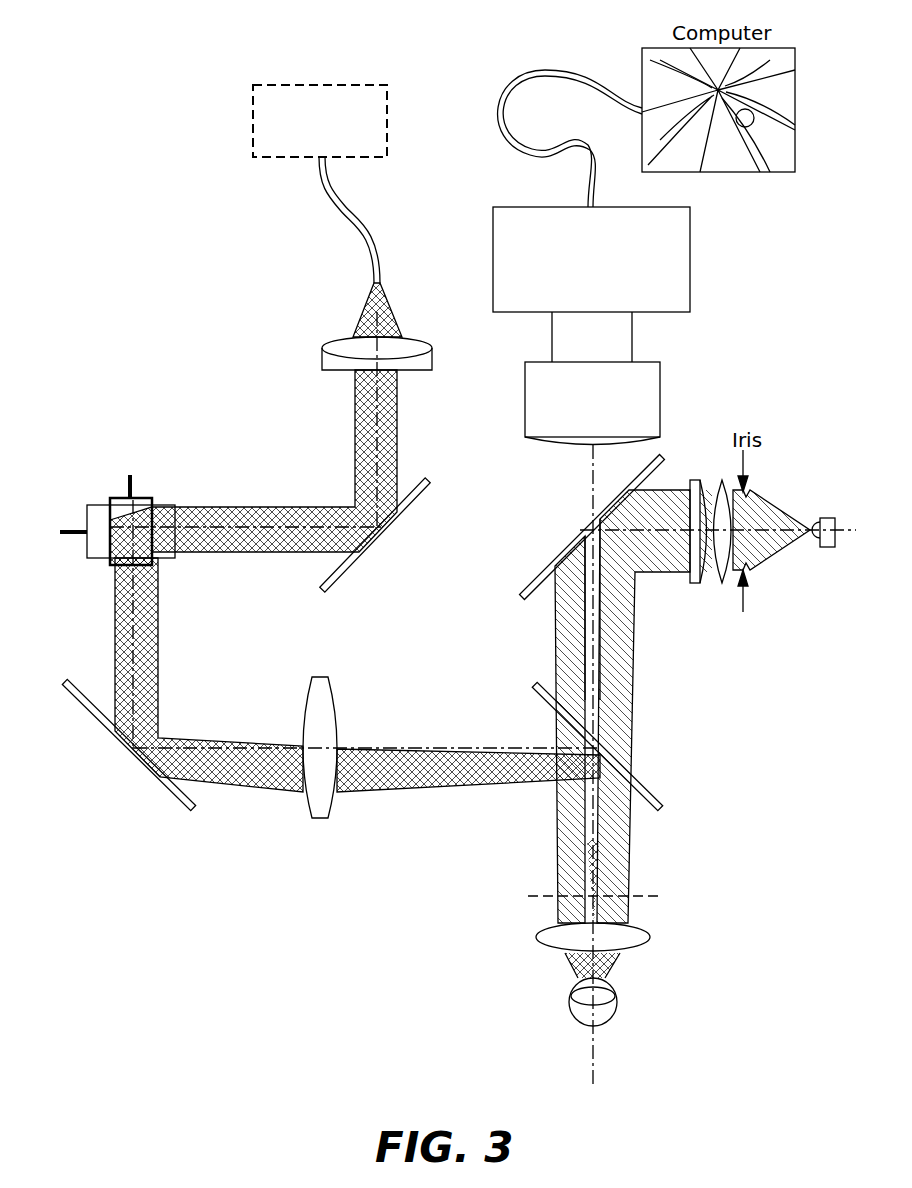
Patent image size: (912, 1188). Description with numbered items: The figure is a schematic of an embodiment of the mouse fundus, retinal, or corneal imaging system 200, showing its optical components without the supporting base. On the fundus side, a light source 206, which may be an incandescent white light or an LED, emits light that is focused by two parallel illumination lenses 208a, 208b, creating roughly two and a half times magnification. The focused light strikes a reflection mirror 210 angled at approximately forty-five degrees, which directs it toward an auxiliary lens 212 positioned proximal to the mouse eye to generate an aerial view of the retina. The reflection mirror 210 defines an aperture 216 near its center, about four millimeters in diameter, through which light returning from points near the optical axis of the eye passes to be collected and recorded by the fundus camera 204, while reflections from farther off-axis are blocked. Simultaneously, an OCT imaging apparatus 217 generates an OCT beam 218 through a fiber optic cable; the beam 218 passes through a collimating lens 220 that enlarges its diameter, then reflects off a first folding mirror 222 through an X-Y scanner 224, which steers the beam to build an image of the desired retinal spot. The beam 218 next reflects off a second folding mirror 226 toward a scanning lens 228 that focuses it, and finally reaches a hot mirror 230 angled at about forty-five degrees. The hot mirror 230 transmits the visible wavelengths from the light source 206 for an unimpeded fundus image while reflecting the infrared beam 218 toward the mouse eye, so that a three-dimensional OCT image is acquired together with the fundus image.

The imaging system 200 is at (212, 103).
The fundus camera 204 is at (612, 275).
The light source 206 is at (826, 518).
The illumination lens 208a is at (700, 583).
The illumination lens 208b is at (724, 583).
The reflection mirror 210 is at (522, 594).
The auxiliary lens 212 is at (538, 944).
The aperture 216 is at (588, 522).
The OCT imaging apparatus 217 is at (345, 135).
The OCT beam 218 is at (386, 292).
The collimating lens 220 is at (326, 346).
The first folding mirror 222 is at (340, 580).
The X-Y scanner 224 is at (105, 505).
The second folding mirror 226 is at (112, 738).
The scanning lens 228 is at (311, 817).
The hot mirror 230 is at (645, 782).